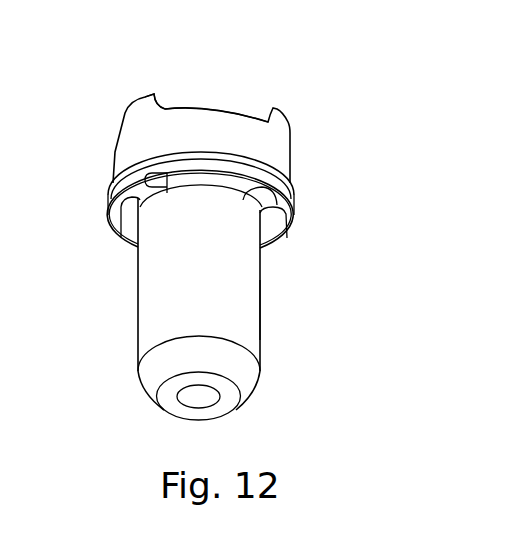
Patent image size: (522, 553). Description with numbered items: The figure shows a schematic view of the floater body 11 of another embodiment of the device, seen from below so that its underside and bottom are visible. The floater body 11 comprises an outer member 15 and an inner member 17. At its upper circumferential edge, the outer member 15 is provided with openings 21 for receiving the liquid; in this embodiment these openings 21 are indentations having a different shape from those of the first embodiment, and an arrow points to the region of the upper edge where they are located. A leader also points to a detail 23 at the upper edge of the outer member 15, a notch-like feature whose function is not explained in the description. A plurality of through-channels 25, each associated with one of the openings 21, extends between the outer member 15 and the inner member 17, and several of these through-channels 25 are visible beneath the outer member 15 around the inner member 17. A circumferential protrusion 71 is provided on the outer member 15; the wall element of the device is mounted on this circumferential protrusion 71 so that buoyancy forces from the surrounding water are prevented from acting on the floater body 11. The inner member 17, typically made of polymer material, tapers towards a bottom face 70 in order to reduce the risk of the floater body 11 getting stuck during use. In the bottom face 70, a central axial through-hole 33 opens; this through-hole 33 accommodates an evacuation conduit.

The floater body 11 is at (271, 310).
The outer member 15 is at (272, 147).
The inner member 17 is at (162, 288).
The openings 21 is at (234, 95).
The slot 23 is at (187, 107).
The through-channels 25 is at (124, 224).
The central axial through-hole 33 is at (197, 395).
The bottom face 70 is at (173, 406).
The circumferential protrusion 71 is at (120, 181).